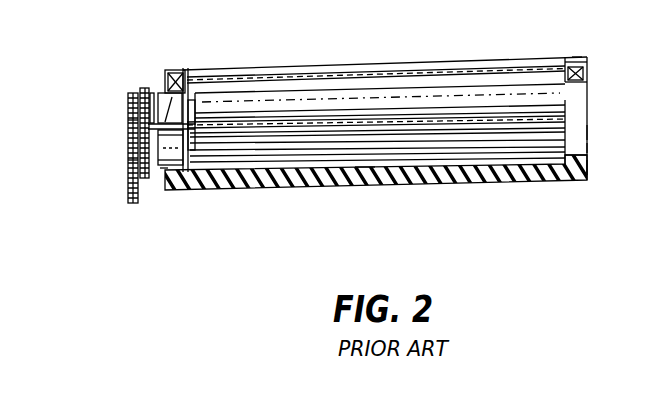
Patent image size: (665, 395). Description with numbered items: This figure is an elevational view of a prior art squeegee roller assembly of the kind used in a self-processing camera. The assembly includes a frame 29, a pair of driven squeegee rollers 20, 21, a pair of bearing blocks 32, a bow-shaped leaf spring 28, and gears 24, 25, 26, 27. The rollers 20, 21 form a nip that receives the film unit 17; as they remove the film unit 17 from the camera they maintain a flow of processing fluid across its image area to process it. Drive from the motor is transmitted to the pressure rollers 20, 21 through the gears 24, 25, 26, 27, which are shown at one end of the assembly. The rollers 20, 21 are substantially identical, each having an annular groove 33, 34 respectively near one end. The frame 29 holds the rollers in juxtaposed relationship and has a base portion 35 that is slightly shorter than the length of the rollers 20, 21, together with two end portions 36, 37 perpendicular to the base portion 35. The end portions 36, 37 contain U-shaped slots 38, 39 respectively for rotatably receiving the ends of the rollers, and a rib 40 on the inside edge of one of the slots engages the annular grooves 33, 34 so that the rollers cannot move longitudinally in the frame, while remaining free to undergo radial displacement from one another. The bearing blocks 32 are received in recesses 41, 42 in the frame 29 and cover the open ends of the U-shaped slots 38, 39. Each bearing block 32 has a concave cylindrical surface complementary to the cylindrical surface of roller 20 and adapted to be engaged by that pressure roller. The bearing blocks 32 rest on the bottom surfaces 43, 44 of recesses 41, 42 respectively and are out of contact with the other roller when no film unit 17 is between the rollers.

The film unit 17 is at (323, 125).
The squeegee roller 20 is at (590, 104).
The squeegee roller 21 is at (590, 148).
The gear 24 is at (130, 158).
The gear 25 is at (128, 122).
The gear 26 is at (130, 183).
The gear 27 is at (150, 100).
The bow-shaped leaf spring 28 is at (386, 73).
The frame 29 is at (512, 184).
The bearing block 32 is at (583, 73).
The annular groove 33 is at (185, 170).
The annular groove 34 is at (194, 110).
The base portion 35 is at (365, 168).
The end portion 36 is at (590, 166).
The end portion 37 is at (163, 173).
The U-shaped slot 38 is at (590, 133).
The U-shaped slot 39 is at (158, 96).
The rib 40 is at (186, 68).
The recess 41 is at (172, 70).
The recess 42 is at (577, 55).
The bottom surface 43 is at (140, 145).
The bottom surface 44 is at (588, 87).